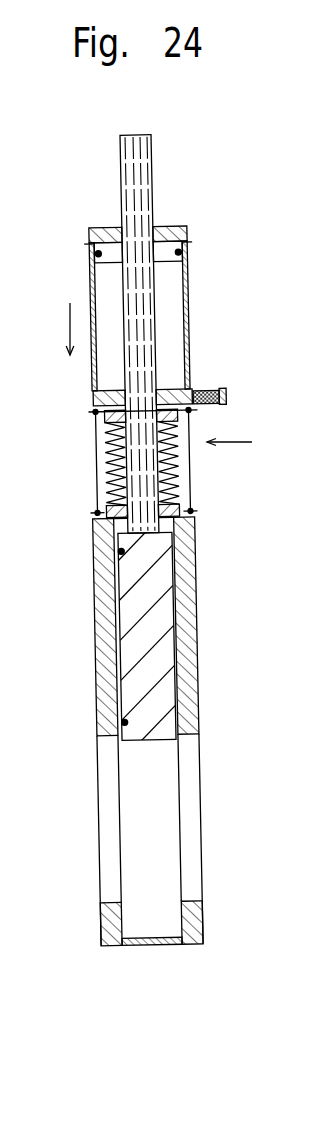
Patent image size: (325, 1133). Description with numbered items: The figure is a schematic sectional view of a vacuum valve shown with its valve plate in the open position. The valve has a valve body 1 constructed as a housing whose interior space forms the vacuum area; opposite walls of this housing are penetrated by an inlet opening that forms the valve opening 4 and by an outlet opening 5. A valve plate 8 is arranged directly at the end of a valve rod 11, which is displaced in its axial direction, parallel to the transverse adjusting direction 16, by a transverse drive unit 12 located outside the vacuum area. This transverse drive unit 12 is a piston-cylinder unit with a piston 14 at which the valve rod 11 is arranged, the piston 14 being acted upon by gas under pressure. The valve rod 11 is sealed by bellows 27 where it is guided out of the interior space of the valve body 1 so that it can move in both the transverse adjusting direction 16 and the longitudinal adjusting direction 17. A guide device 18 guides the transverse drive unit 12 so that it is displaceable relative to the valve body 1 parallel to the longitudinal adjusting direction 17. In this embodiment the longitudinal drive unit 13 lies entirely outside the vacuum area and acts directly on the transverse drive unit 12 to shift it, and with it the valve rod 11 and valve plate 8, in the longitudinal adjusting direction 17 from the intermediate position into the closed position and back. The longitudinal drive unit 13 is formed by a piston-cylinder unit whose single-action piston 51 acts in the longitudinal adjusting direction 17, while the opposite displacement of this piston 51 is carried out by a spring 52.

The valve body 1 is at (210, 915).
The valve opening 4 is at (112, 815).
The outlet opening 5 is at (193, 818).
The valve plate 8 is at (158, 687).
The valve rod 11 is at (137, 485).
The transverse drive unit 12 is at (193, 267).
The longitudinal drive unit 13 is at (210, 380).
The piston 14 is at (115, 255).
The transverse adjusting direction 16 is at (70, 322).
The longitudinal adjusting direction 17 is at (238, 443).
The guide device 18 is at (90, 462).
The bellows 27 is at (172, 477).
The piston 51 is at (223, 405).
The spring 52 is at (220, 390).